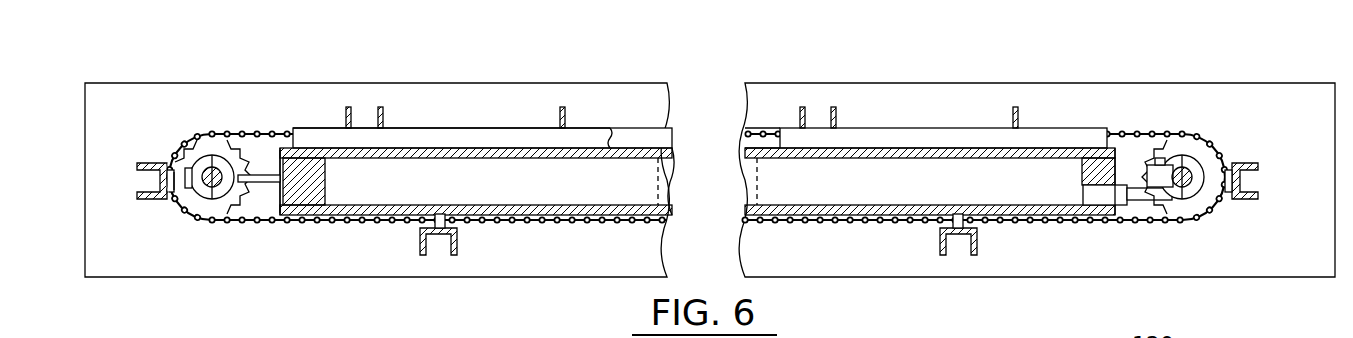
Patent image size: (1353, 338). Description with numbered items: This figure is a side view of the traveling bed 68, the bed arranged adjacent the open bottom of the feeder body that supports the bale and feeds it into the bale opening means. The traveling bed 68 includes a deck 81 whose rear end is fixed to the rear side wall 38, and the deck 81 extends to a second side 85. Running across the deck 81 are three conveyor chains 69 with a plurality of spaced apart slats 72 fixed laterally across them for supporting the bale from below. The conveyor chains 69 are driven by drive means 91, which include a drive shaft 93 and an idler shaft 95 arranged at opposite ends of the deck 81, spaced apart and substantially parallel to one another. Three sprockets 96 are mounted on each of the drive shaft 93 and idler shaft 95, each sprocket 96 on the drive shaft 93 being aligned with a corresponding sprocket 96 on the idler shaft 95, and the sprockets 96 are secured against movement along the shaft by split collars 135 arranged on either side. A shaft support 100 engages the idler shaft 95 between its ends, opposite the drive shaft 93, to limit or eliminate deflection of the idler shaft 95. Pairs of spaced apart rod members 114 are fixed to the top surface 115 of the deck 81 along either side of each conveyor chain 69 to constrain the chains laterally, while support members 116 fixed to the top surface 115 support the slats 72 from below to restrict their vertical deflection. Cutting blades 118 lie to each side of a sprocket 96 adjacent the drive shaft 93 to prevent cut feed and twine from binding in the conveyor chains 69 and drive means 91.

The rear side wall 38 is at (172, 103).
The conveyor chains 69 is at (632, 132).
The slats 72 is at (382, 118).
The rod members 114 is at (487, 137).
The top surface 115 is at (423, 147).
The support members 116 is at (745, 135).
The traveling bed 68 is at (530, 143).
The deck 81 is at (372, 188).
The shaft support 100 is at (1055, 168).
The sprockets 96 is at (205, 208).
The split collar 135 is at (223, 193).
The drive shaft 93 is at (203, 173).
The idler shaft 95 is at (1190, 185).
The cutting blades 118 is at (268, 182).
The second side 85 is at (180, 200).
The drive means 91 is at (240, 120).